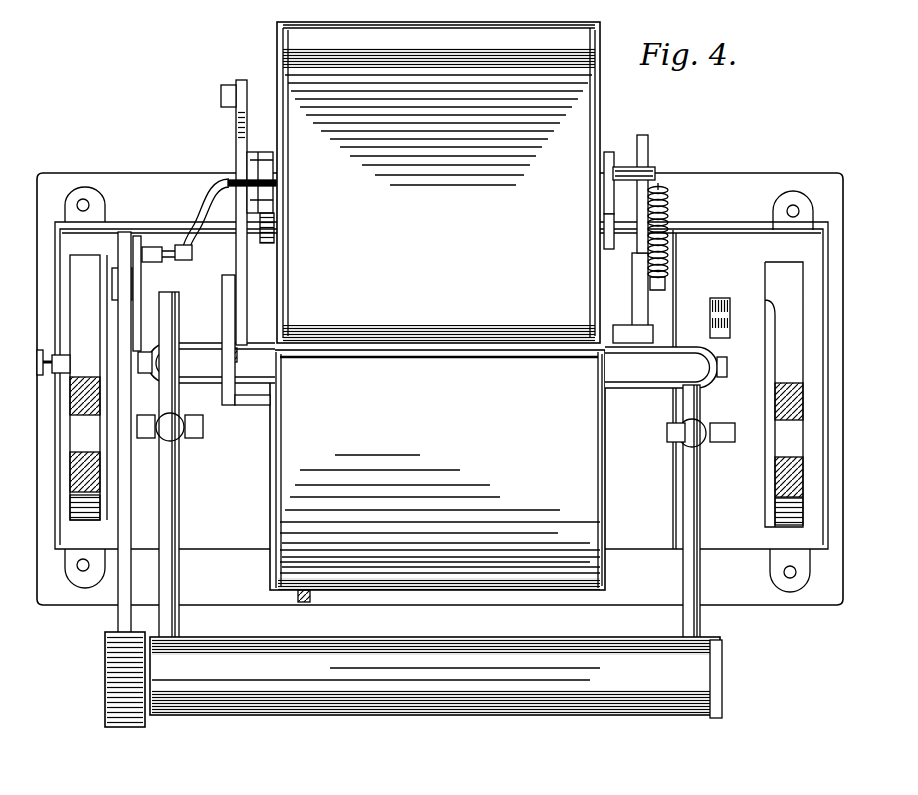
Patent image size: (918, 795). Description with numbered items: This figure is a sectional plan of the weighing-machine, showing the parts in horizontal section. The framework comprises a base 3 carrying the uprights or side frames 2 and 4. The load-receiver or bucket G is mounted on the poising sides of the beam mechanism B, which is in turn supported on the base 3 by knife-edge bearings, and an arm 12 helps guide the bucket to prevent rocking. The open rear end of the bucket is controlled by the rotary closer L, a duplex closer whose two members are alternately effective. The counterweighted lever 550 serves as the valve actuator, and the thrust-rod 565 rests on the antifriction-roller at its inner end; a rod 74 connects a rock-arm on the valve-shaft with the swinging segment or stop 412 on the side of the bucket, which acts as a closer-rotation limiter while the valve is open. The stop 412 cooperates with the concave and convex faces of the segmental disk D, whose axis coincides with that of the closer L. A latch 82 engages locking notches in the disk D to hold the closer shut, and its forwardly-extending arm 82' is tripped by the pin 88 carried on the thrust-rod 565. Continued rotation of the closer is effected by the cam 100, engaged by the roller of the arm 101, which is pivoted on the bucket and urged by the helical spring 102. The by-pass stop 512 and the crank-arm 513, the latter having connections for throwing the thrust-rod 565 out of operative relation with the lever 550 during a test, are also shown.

The side frame 2 is at (73, 469).
The base 3 is at (440, 389).
The side frame 4 is at (780, 480).
The arm 12 is at (302, 603).
The rod 74 is at (237, 358).
The latch 82 is at (238, 198).
The forwardly-extending arm 82' is at (179, 219).
The pin 88 is at (167, 261).
The cam 100 is at (648, 148).
The arm 101 is at (640, 268).
The spring 102 is at (668, 224).
The swinging segment or stop 412 is at (237, 290).
The by-pass stop 512 is at (736, 320).
The crank-arm 513 is at (50, 348).
The counterweighted lever 550 is at (125, 505).
The thrust-rod 565 is at (138, 272).
The beam mechanism B is at (413, 645).
The segmental disk D is at (252, 186).
The load-receiver or bucket G is at (437, 470).
The rotary closer L is at (438, 182).